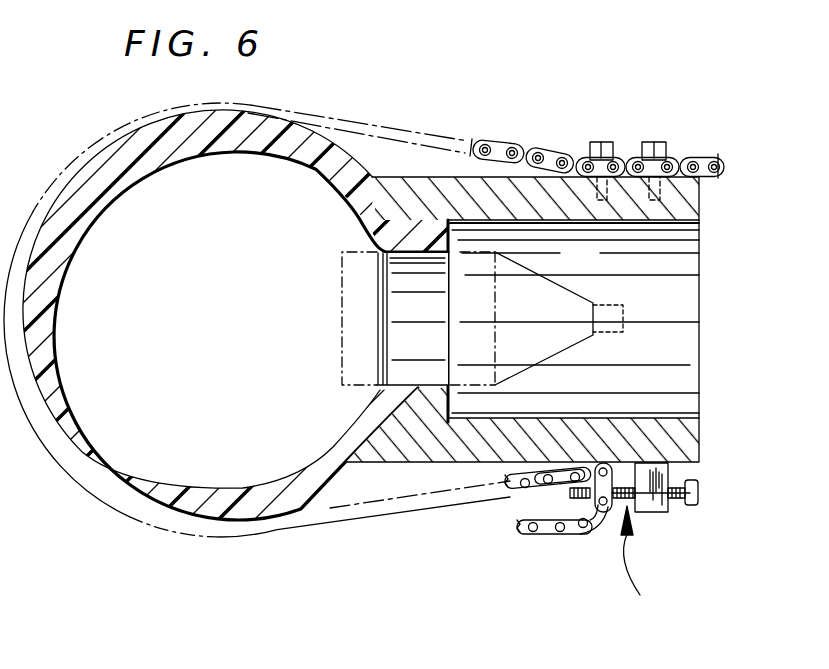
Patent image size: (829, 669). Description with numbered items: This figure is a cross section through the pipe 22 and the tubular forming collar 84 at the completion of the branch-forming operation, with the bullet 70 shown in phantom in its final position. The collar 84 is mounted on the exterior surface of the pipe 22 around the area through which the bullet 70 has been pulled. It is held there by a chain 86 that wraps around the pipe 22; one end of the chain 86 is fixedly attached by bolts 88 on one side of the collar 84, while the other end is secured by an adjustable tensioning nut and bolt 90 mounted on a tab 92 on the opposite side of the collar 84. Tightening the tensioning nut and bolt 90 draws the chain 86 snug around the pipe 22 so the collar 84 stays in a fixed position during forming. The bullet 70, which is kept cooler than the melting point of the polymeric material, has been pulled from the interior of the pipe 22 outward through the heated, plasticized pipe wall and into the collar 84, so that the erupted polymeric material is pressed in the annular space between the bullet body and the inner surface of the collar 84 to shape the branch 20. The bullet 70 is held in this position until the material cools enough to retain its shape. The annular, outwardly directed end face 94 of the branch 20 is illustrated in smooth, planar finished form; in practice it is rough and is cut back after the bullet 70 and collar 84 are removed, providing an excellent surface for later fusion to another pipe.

The branch 20 is at (433, 418).
The pipe 22 is at (343, 487).
The bullet 70 is at (337, 347).
The forming collar 84 is at (700, 462).
The chain 86 is at (497, 148).
The bolts 88 is at (654, 142).
The tensioning nut and bolt 90 is at (651, 569).
The tab 92 is at (658, 512).
The end face 94 is at (450, 405).